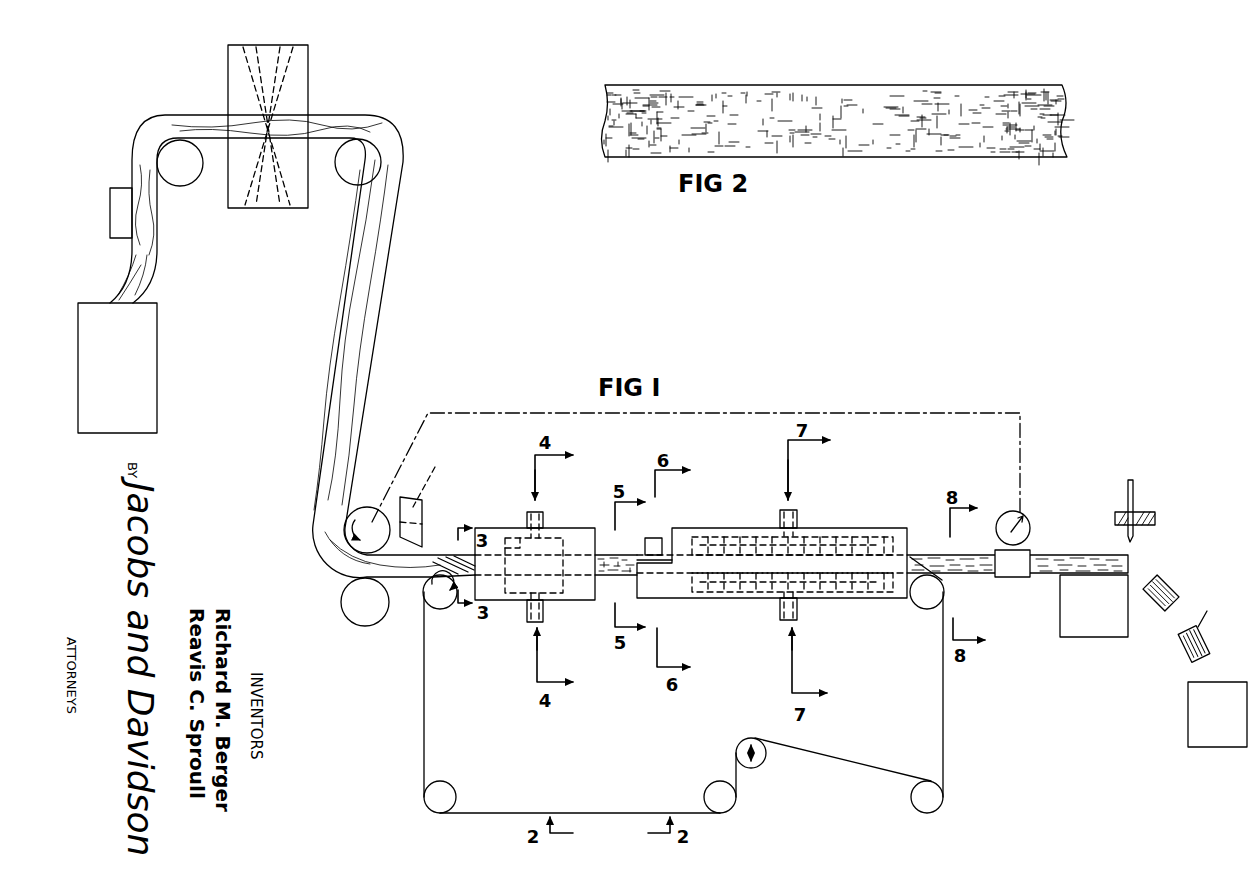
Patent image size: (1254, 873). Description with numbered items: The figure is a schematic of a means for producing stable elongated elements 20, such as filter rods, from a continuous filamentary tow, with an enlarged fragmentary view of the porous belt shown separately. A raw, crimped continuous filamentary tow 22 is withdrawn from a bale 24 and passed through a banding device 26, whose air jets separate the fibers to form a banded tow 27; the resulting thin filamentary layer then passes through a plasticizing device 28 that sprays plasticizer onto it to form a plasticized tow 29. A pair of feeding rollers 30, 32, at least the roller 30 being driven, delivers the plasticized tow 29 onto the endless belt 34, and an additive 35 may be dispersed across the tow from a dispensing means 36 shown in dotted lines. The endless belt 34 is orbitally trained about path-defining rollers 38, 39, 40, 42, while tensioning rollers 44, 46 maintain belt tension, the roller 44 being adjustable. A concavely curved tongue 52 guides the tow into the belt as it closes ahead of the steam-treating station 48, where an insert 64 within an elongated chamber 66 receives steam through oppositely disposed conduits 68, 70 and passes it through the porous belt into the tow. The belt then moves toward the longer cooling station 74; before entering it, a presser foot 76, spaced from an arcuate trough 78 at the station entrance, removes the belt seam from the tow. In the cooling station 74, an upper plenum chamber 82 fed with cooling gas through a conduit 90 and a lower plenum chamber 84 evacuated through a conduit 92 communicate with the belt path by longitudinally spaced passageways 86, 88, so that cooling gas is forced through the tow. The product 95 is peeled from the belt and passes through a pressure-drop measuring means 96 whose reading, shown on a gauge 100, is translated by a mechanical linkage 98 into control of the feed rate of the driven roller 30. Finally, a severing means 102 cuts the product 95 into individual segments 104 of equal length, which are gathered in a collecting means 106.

In FIG. 1, the means for producing stable elongated elements 20 is at (385, 732).
In FIG. 1, the continuous filamentary tow 22 is at (160, 272).
In FIG. 1, the bale 24 is at (158, 372).
In FIG. 1, the banding device 26 is at (112, 226).
In FIG. 1, the banded tow 27 is at (132, 157).
In FIG. 1, the plasticizing device 28 is at (298, 97).
In FIG. 1, the plasticized tow 29 is at (355, 338).
In FIG. 1, the feeding roller 30 is at (362, 508).
In FIG. 1, the feeding roller 32 is at (342, 596).
In FIG. 1, the endless belt 34 is at (613, 555).
In FIG. 2, the endless belt 34 is at (1022, 148).
In FIG. 1, the additive 35 is at (432, 477).
In FIG. 1, the dispensing means 36 is at (423, 520).
In FIG. 1, the path-defining roller 38 is at (445, 606).
In FIG. 1, the path-defining roller 39 is at (922, 605).
In FIG. 1, the path-defining roller 40 is at (926, 782).
In FIG. 1, the path-defining roller 42 is at (450, 795).
In FIG. 1, the tensioning roller 44 is at (768, 754).
In FIG. 1, the tensioning roller 46 is at (715, 787).
In FIG. 1, the steam-treating station 48 is at (573, 527).
In FIG. 1, the tongue 52 is at (443, 555).
In FIG. 1, the insert 64 is at (508, 540).
In FIG. 1, the chamber 66 is at (567, 590).
In FIG. 1, the conduit 68 is at (523, 527).
In FIG. 1, the conduit 70 is at (543, 608).
In FIG. 1, the cooling station 74 is at (857, 520).
In FIG. 1, the presser foot 76 is at (655, 538).
In FIG. 1, the arcuate trough 78 is at (642, 560).
In FIG. 1, the upper plenum chamber 82 is at (755, 535).
In FIG. 1, the lower plenum chamber 84 is at (723, 592).
In FIG. 1, the passageways 86 is at (720, 540).
In FIG. 1, the passageways 88 is at (867, 592).
In FIG. 1, the conduit 90 is at (798, 522).
In FIG. 1, the conduit 92 is at (798, 600).
In FIG. 1, the product 95 is at (977, 555).
In FIG. 1, the pressure-drop measuring means 96 is at (1017, 569).
In FIG. 1, the mechanical linkage 98 is at (753, 412).
In FIG. 1, the gauge 100 is at (1031, 526).
In FIG. 1, the severing means 102 is at (1123, 484).
In FIG. 1, the segments 104 is at (1173, 602).
In FIG. 1, the collecting means 106 is at (1192, 705).